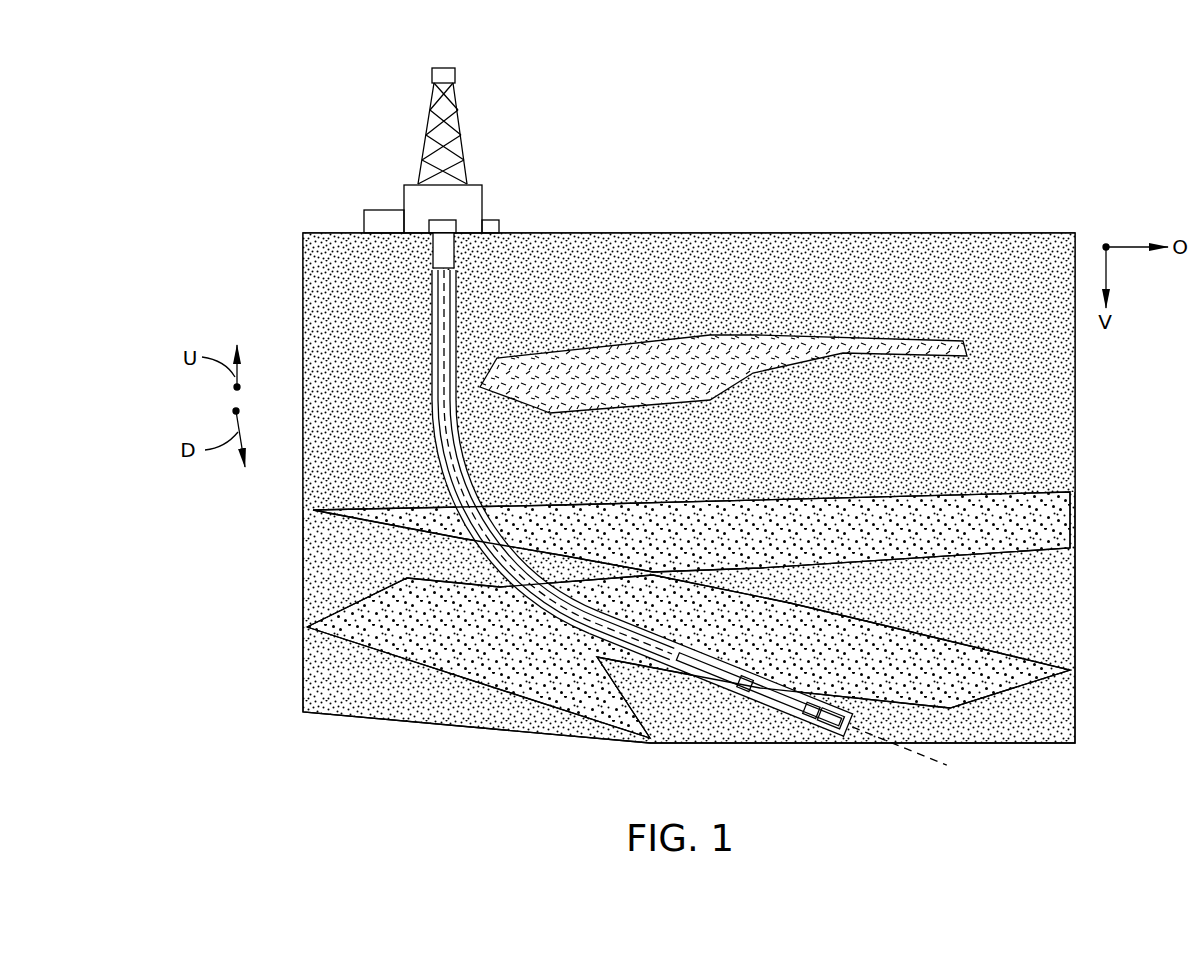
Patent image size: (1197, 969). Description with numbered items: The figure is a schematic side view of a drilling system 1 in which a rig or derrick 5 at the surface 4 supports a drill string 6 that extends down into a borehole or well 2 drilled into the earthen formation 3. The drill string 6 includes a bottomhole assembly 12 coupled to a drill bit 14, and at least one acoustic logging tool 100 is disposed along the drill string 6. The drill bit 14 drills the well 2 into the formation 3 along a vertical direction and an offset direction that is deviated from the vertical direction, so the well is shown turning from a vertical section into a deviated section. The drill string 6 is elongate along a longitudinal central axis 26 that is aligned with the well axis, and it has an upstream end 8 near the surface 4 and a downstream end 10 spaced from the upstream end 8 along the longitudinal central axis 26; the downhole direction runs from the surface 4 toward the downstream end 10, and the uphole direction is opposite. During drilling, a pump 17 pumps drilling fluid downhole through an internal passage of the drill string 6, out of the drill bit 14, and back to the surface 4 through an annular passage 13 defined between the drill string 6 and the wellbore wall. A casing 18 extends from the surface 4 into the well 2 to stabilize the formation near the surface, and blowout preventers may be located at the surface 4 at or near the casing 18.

The drilling system 1 is at (377, 181).
The borehole or well 2 is at (430, 420).
The earthen formation 3 is at (325, 420).
The surface 4 is at (1058, 233).
The rig or derrick 5 is at (417, 141).
The drill string 6 is at (455, 512).
The upstream end 8 is at (427, 257).
The downstream end 10 is at (855, 752).
The bottomhole assembly 12 is at (762, 717).
The annular passage 13 is at (512, 596).
The drill bit 14 is at (842, 708).
The pump 17 is at (378, 223).
The casing 18 is at (437, 242).
The longitudinal central axis 26 is at (930, 765).
The acoustic logging tool 100 is at (760, 675).